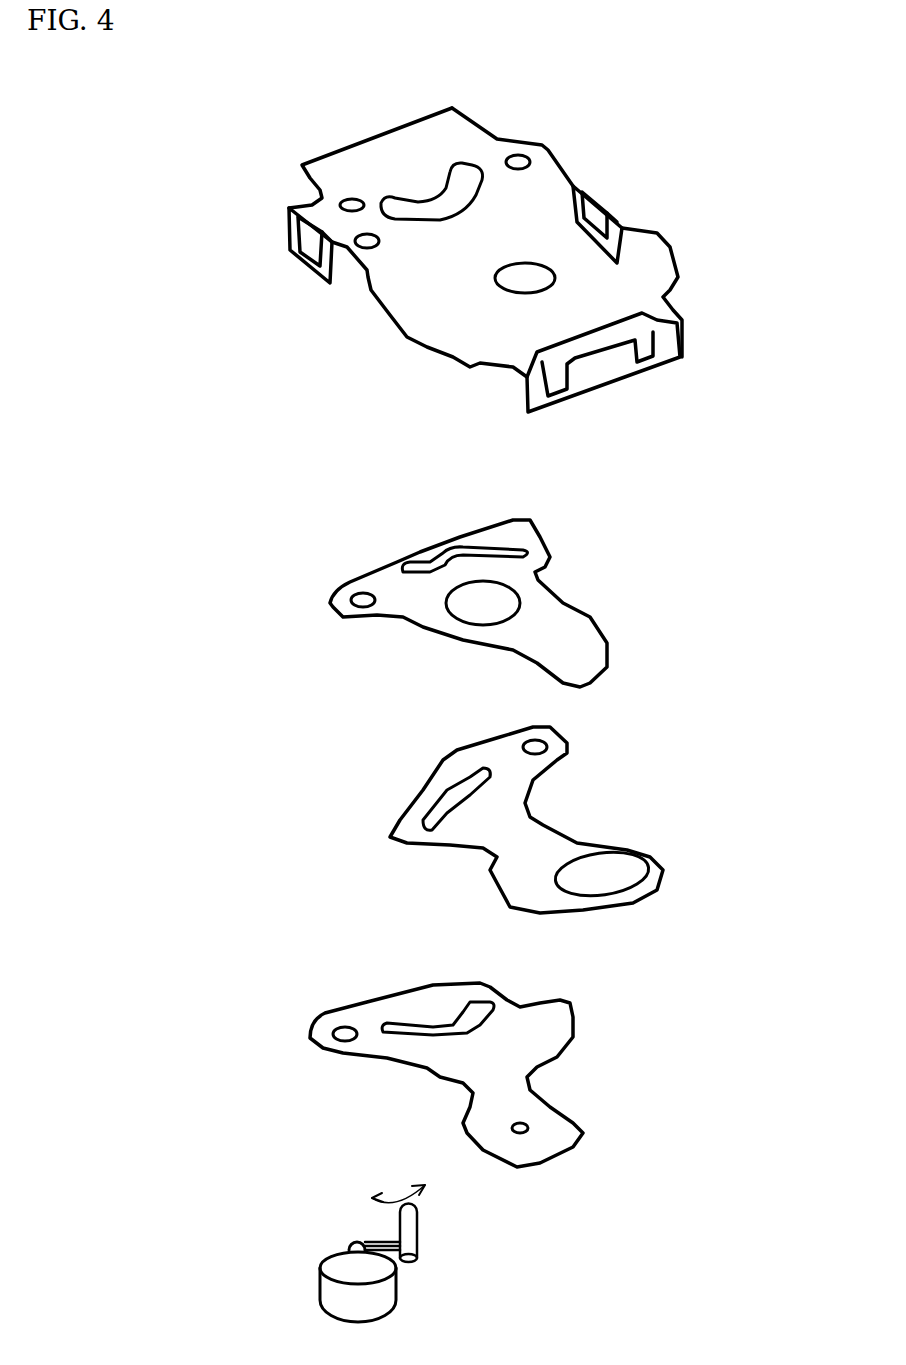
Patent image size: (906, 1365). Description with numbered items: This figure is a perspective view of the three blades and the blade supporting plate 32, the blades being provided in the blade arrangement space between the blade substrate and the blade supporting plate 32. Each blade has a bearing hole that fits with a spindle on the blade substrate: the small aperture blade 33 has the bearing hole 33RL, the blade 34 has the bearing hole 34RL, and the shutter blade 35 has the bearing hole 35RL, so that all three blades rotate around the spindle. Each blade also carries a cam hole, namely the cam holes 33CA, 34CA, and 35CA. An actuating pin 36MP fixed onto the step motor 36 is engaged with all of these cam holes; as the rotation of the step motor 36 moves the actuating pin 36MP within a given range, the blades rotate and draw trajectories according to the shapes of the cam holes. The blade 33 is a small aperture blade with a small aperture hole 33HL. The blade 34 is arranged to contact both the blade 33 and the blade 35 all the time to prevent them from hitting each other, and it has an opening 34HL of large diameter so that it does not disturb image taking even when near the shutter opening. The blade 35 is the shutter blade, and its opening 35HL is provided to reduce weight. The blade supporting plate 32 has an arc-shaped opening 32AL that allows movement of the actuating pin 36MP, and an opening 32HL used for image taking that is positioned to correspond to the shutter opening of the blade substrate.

The blade supporting plate 32 is at (663, 237).
The arc-shaped opening 32AL is at (423, 203).
The opening 32HL is at (523, 293).
The shutter blade 35 is at (590, 630).
The cam hole 35CA is at (430, 567).
The opening 35HL is at (513, 588).
The bearing hole 35RL is at (360, 600).
The blade 34 is at (540, 825).
The cam hole 34CA is at (440, 800).
The bearing hole 34RL is at (543, 750).
The opening 34HL is at (643, 883).
The small aperture blade 33 is at (555, 1030).
The cam hole 33CA is at (420, 1032).
The bearing hole 33RL is at (340, 1045).
The small aperture hole 33HL is at (530, 1130).
The step motor 36 is at (320, 1270).
The actuating pin 36MP is at (413, 1230).